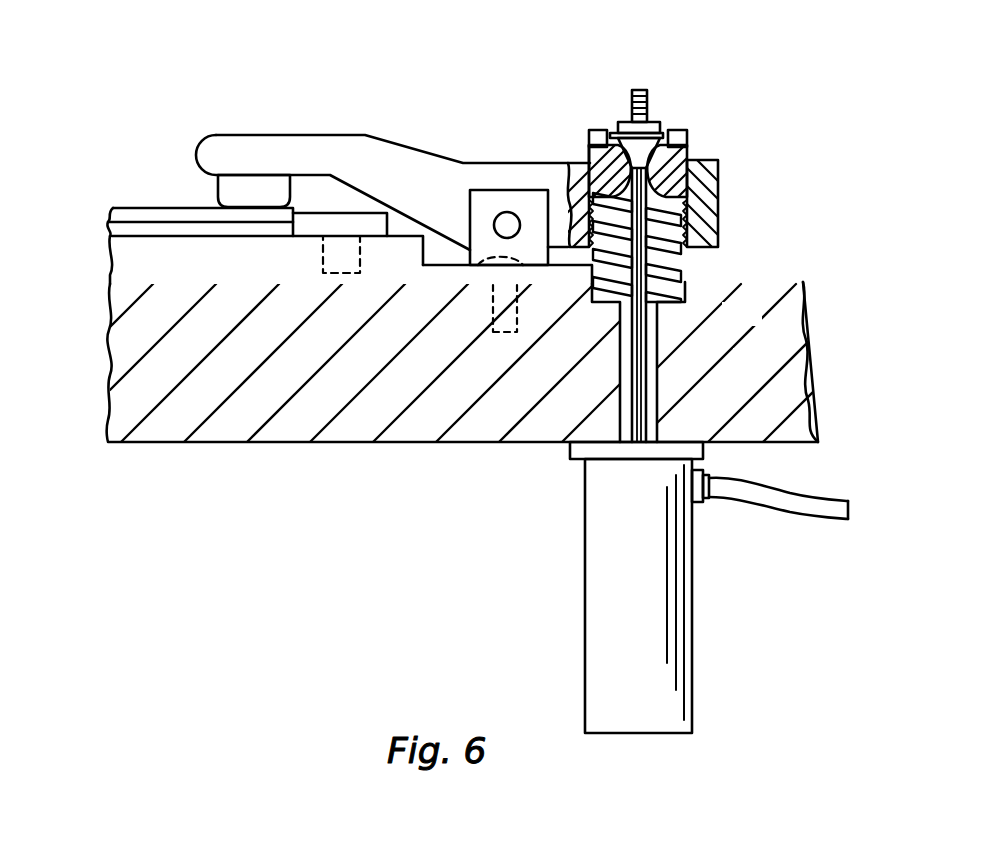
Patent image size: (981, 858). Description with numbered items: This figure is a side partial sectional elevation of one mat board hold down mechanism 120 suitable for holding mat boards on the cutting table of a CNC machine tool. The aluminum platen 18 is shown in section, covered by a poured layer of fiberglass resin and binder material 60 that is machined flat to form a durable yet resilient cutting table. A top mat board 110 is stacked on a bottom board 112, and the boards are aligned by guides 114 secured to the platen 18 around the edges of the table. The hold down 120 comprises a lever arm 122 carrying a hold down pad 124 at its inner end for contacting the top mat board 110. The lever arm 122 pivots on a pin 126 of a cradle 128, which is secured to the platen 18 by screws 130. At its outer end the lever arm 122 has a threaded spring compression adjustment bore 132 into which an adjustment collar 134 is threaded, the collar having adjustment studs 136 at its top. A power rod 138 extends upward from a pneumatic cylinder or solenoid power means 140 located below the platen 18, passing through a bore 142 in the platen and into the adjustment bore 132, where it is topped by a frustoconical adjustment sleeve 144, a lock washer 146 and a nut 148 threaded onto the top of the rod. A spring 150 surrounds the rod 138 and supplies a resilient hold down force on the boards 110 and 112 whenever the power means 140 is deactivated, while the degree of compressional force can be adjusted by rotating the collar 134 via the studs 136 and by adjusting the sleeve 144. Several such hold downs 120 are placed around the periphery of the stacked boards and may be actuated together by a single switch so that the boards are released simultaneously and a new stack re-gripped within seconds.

The platen 18 is at (762, 374).
The fiberglass resin and binder material 60 is at (162, 287).
The top mat board 110 is at (126, 212).
The bottom board 112 is at (112, 279).
The guides 114 is at (343, 237).
The hold down mechanism 120 is at (533, 121).
The lever arm 122 is at (352, 155).
The hold down pad 124 is at (278, 190).
The pin 126 is at (511, 217).
The cradle 128 is at (531, 240).
The screws 130 is at (484, 260).
The threaded spring compression adjustment bore 132 is at (718, 205).
The adjustment collar 134 is at (690, 150).
The adjustment studs 136 is at (685, 131).
The power rod 138 is at (648, 345).
The power means 140 is at (657, 645).
The bore 142 is at (628, 398).
The frustoconical adjustment sleeve 144 is at (660, 140).
The lock washer 146 is at (617, 125).
The nut 148 is at (652, 120).
The spring 150 is at (690, 267).